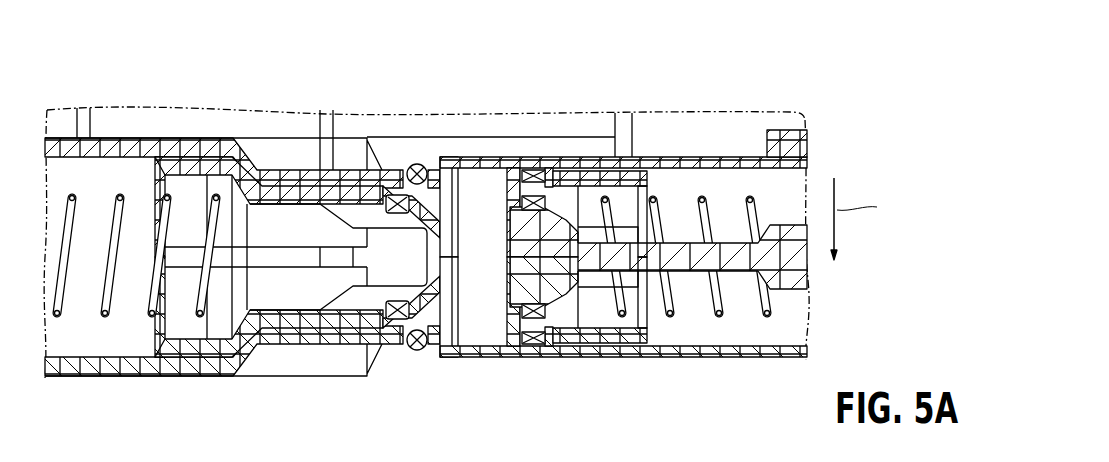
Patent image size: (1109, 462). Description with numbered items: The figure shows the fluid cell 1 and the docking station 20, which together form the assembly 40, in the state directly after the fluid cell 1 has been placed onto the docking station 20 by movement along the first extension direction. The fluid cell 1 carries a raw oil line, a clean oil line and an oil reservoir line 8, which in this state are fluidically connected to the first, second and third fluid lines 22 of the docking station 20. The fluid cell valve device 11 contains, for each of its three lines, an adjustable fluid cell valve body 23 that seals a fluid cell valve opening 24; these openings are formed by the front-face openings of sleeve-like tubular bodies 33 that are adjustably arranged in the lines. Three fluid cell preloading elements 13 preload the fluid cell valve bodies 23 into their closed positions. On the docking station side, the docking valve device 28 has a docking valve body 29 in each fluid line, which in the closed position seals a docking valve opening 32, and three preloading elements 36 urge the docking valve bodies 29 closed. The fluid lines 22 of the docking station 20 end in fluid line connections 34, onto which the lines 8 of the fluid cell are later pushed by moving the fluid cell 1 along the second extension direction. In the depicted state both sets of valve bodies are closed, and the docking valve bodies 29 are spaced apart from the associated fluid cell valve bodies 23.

The fluid cell 1 is at (488, 214).
The raw oil line, clean oil line and oil reservoir line 8 is at (677, 356).
The fluid cell valve device 11 is at (675, 122).
The fluid cell preloading elements 13 is at (763, 313).
The docking station 20 is at (114, 96).
The first, second and third fluid lines 22 is at (267, 337).
The fluid cell valve bodies 23 is at (540, 230).
The fluid cell valve openings 24 is at (500, 203).
The docking valve device 28 is at (268, 148).
The docking valve bodies 29 is at (342, 217).
The docking valve openings 32 is at (444, 203).
The tubular bodies 33 is at (578, 345).
The fluid line connections 34 is at (417, 350).
The docking preloading elements 36 is at (100, 320).
The assembly 40 is at (832, 118).